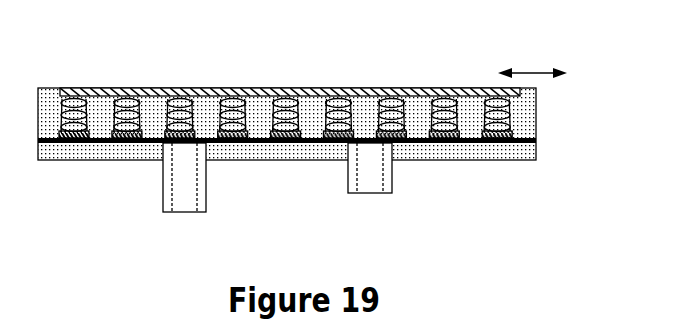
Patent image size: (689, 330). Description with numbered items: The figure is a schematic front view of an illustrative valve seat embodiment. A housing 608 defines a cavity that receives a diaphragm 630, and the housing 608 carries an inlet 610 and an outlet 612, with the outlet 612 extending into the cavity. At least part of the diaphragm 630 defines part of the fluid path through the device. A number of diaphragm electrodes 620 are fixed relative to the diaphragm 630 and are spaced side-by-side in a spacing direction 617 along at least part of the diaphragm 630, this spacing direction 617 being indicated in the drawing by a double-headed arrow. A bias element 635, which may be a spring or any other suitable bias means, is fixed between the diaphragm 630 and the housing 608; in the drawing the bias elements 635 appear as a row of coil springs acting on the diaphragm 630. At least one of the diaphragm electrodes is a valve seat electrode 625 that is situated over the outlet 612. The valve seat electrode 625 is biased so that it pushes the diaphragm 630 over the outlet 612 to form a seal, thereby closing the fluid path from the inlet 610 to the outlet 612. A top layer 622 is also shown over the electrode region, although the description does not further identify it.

The housing 608 is at (558, 113).
The inlet 610 is at (180, 195).
The outlet 612 is at (373, 185).
The spacing direction 617 is at (532, 61).
The diaphragm electrodes 620 is at (130, 154).
The top cover layer 622 is at (315, 91).
The valve seat electrode 625 is at (200, 138).
The diaphragm 630 is at (482, 143).
The bias element 635 is at (453, 118).